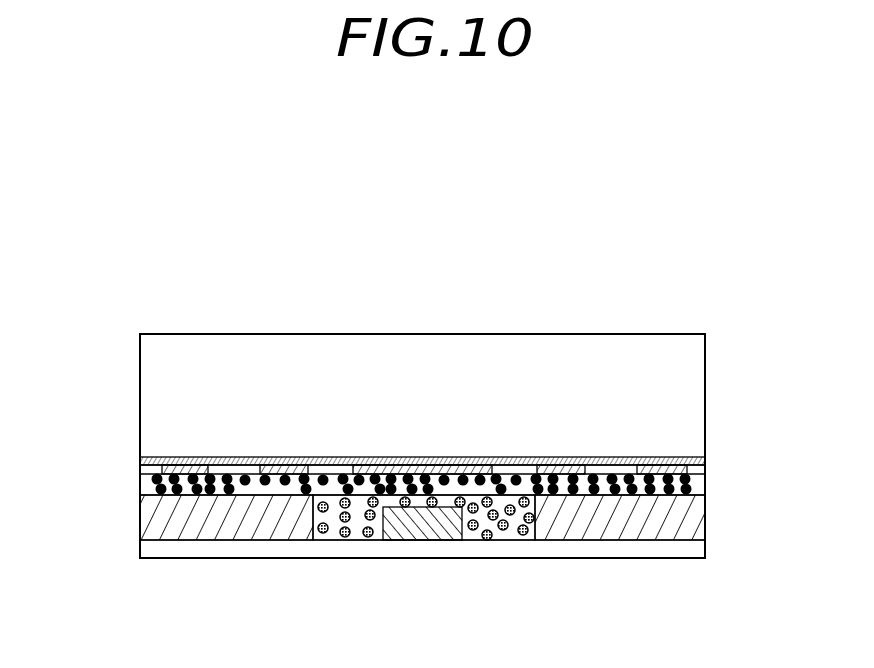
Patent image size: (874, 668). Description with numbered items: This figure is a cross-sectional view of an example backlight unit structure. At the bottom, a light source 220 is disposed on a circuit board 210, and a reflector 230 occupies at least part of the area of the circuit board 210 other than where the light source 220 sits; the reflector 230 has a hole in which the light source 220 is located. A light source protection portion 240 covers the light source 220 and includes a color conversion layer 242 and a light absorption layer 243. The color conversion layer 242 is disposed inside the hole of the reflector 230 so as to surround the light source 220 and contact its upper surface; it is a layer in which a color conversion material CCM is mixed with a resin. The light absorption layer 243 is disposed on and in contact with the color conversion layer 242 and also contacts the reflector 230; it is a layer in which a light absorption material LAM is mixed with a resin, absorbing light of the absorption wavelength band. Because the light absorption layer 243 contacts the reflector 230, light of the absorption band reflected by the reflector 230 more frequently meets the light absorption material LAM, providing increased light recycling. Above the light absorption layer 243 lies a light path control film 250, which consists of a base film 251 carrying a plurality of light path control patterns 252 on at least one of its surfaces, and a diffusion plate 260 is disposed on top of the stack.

The circuit board 210 is at (152, 548).
The light source 220 is at (421, 528).
The reflector 230 is at (152, 517).
The light source protection portion 240 is at (790, 468).
The color conversion layer 242 is at (517, 522).
The light absorption layer 243 is at (688, 483).
The light path control film 250 is at (72, 445).
The base film 251 is at (140, 461).
The light path control patterns 252 is at (175, 474).
The diffusion plate 260 is at (140, 403).
The light absorption material LAM is at (308, 498).
The color conversion material CCM is at (350, 516).